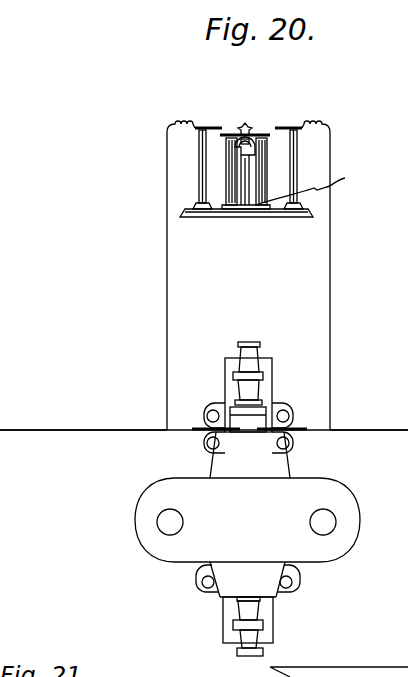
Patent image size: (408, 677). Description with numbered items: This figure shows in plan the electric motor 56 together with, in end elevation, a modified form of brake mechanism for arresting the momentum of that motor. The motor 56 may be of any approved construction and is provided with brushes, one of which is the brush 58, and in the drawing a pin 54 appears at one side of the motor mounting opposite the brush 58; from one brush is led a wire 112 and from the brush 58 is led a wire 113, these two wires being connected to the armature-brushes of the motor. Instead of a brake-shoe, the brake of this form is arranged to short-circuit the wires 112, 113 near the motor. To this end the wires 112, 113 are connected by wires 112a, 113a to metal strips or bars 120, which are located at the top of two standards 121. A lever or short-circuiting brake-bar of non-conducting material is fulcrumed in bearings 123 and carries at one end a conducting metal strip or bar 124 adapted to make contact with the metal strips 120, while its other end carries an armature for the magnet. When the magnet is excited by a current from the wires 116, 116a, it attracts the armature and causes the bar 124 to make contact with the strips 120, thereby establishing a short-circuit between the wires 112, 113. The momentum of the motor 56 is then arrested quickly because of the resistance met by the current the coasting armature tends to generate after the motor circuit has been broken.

In FIG. 20, the pin 54 is at (300, 433).
In FIG. 20, the electric motor 56 is at (247, 499).
In FIG. 20, the brush 58 is at (193, 432).
In FIG. 20, the wire 112 is at (369, 424).
In FIG. 20, the wire 112a is at (330, 300).
In FIG. 20, the wire 113 is at (28, 428).
In FIG. 20, the wire 113a is at (112, 315).
In FIG. 21, the wire 113a is at (312, 667).
In FIG. 20, the wire 116 is at (222, 213).
In FIG. 20, the wire 116a is at (318, 181).
In FIG. 20, the metal strips 120 is at (212, 126).
In FIG. 20, the standards 121 is at (167, 180).
In FIG. 20, the bearings 123 is at (247, 213).
In FIG. 20, the conducting metal strip 124 is at (266, 137).